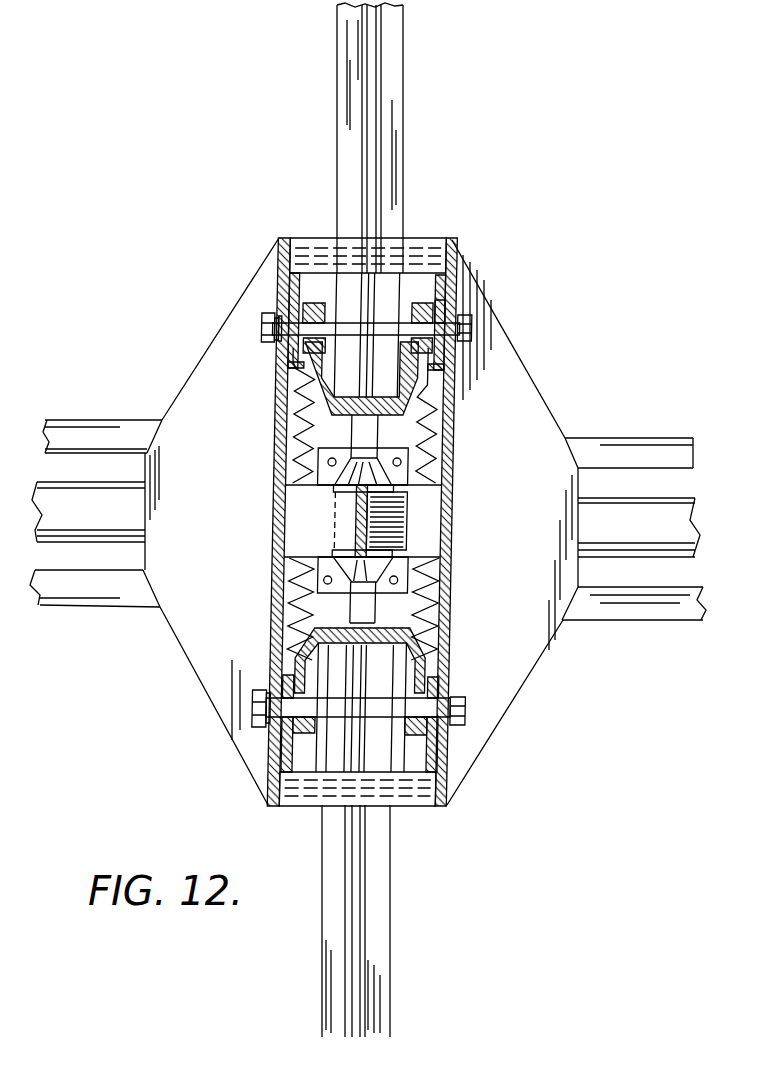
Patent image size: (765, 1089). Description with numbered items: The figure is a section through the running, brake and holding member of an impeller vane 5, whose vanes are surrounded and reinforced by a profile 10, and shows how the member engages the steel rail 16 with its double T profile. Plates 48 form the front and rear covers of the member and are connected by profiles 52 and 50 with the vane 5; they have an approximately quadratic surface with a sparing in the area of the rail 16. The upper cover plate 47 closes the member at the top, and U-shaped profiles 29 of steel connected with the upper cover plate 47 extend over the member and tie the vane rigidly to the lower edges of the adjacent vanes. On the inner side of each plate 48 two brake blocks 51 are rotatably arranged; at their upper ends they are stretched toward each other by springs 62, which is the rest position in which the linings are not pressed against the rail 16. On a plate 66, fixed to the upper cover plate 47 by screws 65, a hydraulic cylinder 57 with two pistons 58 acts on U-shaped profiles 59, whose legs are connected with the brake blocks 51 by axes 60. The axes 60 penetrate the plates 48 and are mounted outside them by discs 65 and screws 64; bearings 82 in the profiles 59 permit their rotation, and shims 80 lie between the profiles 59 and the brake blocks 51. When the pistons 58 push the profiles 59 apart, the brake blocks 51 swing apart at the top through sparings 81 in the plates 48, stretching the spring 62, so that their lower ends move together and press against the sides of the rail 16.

The impeller vane 5 is at (372, 62).
The profile 10 is at (393, 78).
The steel rail 16 is at (92, 500).
The U-shaped profile 29 is at (70, 430).
The upper cover plate 47 is at (210, 388).
The plate 48 is at (280, 417).
The profile 50 is at (415, 246).
The brake block 51 is at (441, 247).
The profile 52 is at (300, 530).
The hydraulic cylinder 57 is at (353, 558).
The piston 58 is at (353, 597).
The U-shaped profile 59 is at (413, 375).
The axis 60 is at (342, 328).
The spring 62 is at (437, 400).
The screw 64 is at (262, 328).
The disc 65 is at (275, 312).
The plate 66 is at (400, 588).
The shim 80 is at (440, 298).
The sparing 81 is at (450, 310).
The bearing 82 is at (412, 745).